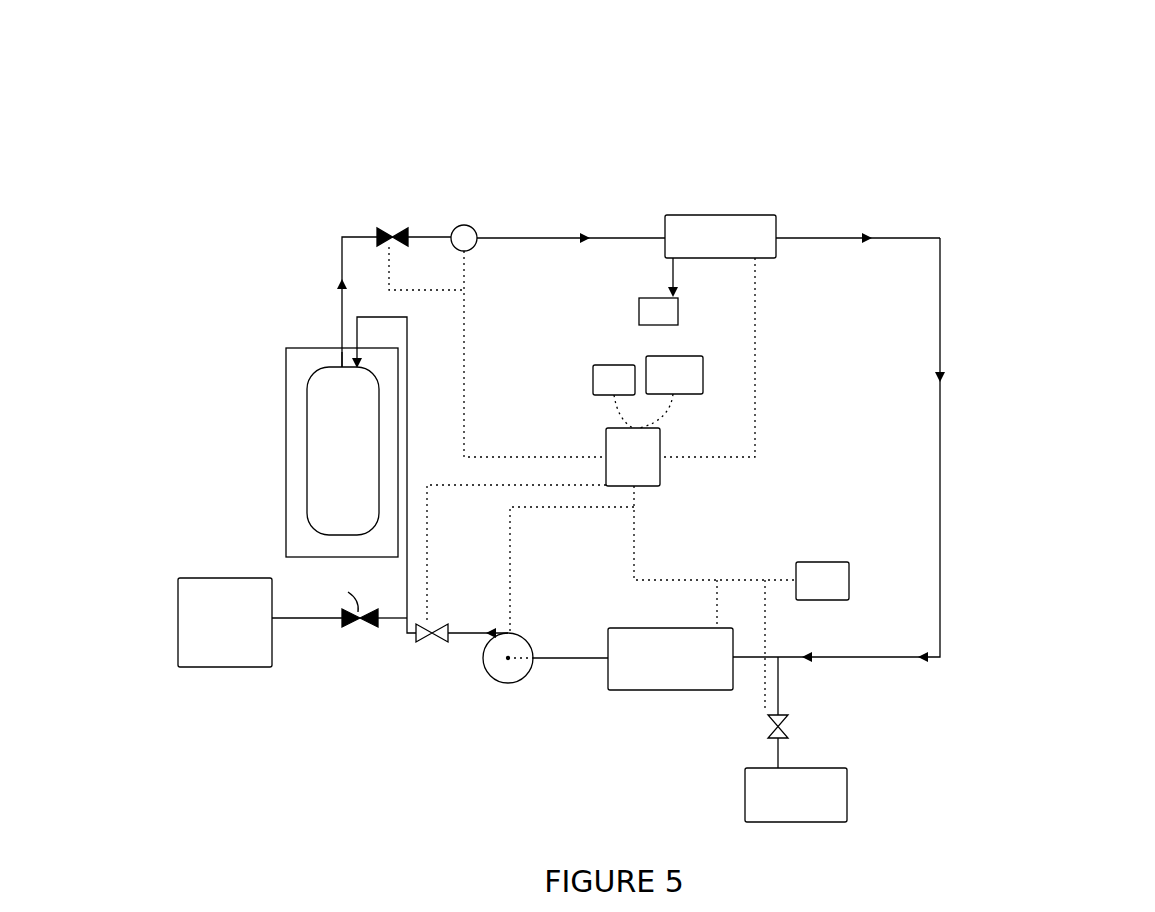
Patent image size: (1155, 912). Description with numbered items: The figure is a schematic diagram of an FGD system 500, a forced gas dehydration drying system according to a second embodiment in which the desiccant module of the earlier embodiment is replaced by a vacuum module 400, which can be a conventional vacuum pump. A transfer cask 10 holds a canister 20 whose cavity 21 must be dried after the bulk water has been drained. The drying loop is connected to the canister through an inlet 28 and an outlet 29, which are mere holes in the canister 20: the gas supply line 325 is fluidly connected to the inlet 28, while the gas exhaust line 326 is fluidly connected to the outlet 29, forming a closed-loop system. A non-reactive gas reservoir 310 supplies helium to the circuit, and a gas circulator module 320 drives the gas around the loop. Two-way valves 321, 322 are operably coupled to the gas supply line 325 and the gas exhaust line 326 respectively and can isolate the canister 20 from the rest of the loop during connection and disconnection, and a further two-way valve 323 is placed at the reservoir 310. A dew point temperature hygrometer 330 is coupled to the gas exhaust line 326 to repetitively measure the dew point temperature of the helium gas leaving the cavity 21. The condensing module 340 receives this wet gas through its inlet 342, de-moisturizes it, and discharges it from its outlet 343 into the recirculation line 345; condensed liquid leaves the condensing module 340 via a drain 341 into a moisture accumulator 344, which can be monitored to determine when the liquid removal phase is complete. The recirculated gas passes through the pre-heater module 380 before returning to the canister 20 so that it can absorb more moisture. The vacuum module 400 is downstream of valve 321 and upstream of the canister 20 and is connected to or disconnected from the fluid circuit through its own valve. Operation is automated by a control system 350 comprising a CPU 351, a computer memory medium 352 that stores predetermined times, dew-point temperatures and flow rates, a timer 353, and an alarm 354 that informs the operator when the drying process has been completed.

The FGD system 500 is at (1062, 114).
The transfer cask 10 is at (286, 452).
The canister 20 is at (286, 388).
The cavity 21 is at (315, 472).
The inlet 28 is at (360, 368).
The outlet 29 is at (337, 364).
The non-reactive gas reservoir 310 is at (848, 796).
The gas circulator module 320 is at (527, 672).
The two-way valve 321 is at (412, 640).
The two-way valve 322 is at (406, 226).
The two-way valve 323 is at (770, 722).
The gas supply line 325 is at (407, 387).
The gas exhaust line 326 is at (340, 272).
The dew point temperature hygrometer 330 is at (468, 224).
The condensing module 340 is at (718, 214).
The drain 341 is at (665, 270).
The inlet 342 is at (660, 236).
The outlet 343 is at (778, 236).
The moisture accumulator 344 is at (638, 315).
The recirculation line 345 is at (942, 333).
The control system 350 is at (732, 405).
The CPU 351 is at (660, 488).
The computer memory medium 352 is at (612, 365).
The timer 353 is at (673, 356).
The alarm 354 is at (828, 562).
The pre-heater module 380 is at (655, 628).
The vacuum module 400 is at (215, 667).